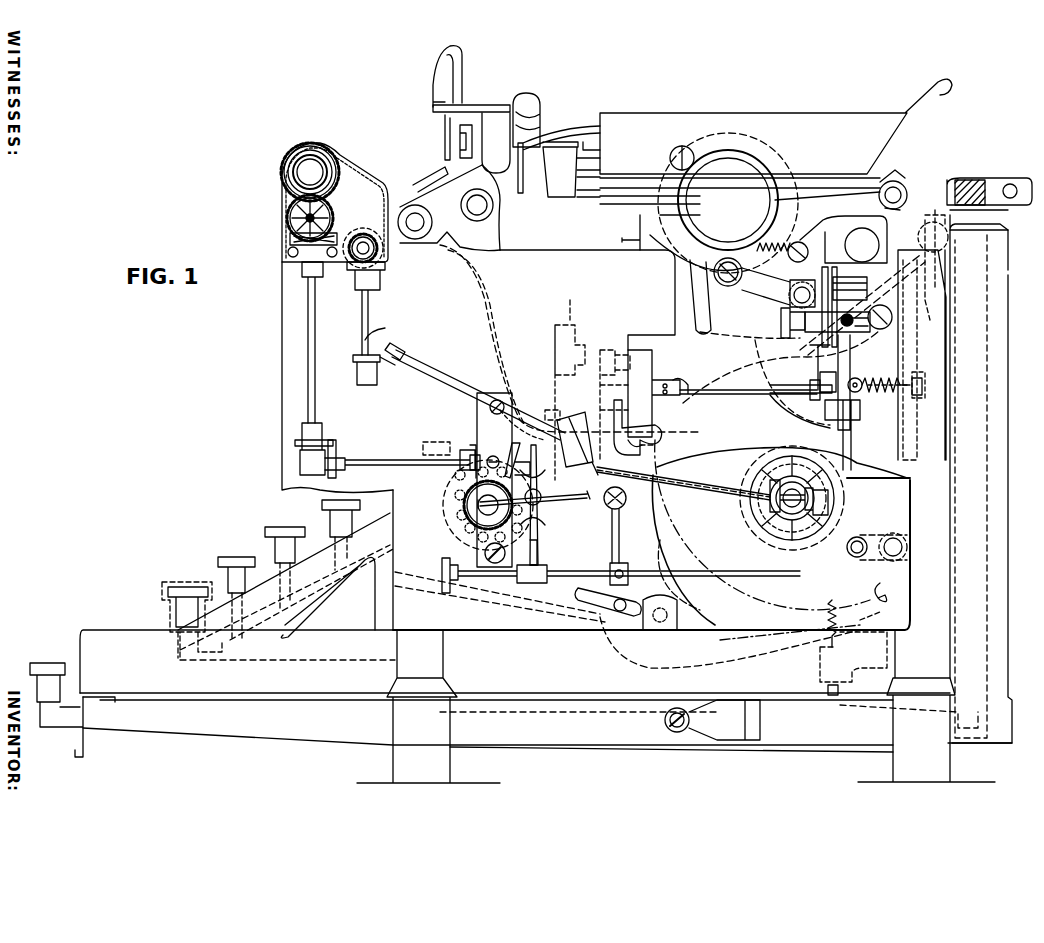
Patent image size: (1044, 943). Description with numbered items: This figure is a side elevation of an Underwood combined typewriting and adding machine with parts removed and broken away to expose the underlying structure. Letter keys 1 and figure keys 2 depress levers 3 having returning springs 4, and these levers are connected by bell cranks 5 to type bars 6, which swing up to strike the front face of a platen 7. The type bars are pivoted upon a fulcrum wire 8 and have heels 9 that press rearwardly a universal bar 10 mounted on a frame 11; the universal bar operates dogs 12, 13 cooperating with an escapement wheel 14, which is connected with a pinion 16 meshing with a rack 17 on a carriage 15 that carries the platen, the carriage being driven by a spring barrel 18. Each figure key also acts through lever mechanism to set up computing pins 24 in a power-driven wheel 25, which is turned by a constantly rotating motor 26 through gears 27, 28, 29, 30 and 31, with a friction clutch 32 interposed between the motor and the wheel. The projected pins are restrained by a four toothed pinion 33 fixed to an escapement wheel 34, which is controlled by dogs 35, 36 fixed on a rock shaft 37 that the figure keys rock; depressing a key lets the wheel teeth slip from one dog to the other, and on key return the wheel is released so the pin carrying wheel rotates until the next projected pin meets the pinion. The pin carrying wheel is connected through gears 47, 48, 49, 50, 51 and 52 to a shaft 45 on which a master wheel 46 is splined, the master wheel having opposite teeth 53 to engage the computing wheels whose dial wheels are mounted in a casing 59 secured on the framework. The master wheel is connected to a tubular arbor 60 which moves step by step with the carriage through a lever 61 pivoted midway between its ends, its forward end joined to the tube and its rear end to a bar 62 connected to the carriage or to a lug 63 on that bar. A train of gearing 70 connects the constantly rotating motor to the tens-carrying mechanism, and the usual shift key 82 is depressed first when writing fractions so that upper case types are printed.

The letter keys 1 is at (205, 583).
The figure keys 2 is at (322, 505).
The levers 3 is at (355, 585).
The returning springs 4 is at (840, 648).
The bell cranks 5 is at (672, 538).
The type bars 6 is at (436, 442).
The platen 7 is at (755, 158).
The fulcrum wire 8 is at (655, 445).
The heels 9 is at (556, 437).
The universal bar 10 is at (652, 415).
The frame 11 is at (745, 396).
The dog 12 is at (825, 418).
The dog 13 is at (845, 333).
The escapement wheel 14 is at (818, 372).
The carriage 15 is at (776, 126).
The pinion 16 is at (805, 340).
The rack 17 is at (790, 300).
The spring barrel 18 is at (858, 395).
The computing pins 24 is at (460, 522).
The power-driven wheel 25 is at (450, 485).
The motor 26 is at (740, 378).
The gear 27 is at (792, 485).
The gear 28 is at (765, 500).
The gear 29 is at (515, 452).
The gear 30 is at (548, 400).
The gear 31 is at (465, 505).
The friction clutch 32 is at (765, 535).
The four toothed pinion 33 is at (545, 504).
The escapement wheel 34 is at (540, 534).
The dog 35 is at (547, 574).
The dog 36 is at (530, 548).
The rock shaft 37 is at (603, 575).
The shaft 45 is at (304, 218).
The master wheel 46 is at (335, 204).
The gear 47 is at (478, 418).
The gear 48 is at (468, 450).
The gear 49 is at (338, 448).
The gear 50 is at (325, 440).
The gear 51 is at (298, 246).
The gear 52 is at (360, 237).
The opposite teeth 53 is at (296, 204).
The casing 59 is at (286, 160).
The tubular arbor 60 is at (338, 172).
The lever 61 is at (508, 320).
The bar 62 is at (968, 180).
The lug 63 is at (975, 210).
The train of gearing 70 is at (380, 262).
The shift key 82 is at (178, 587).